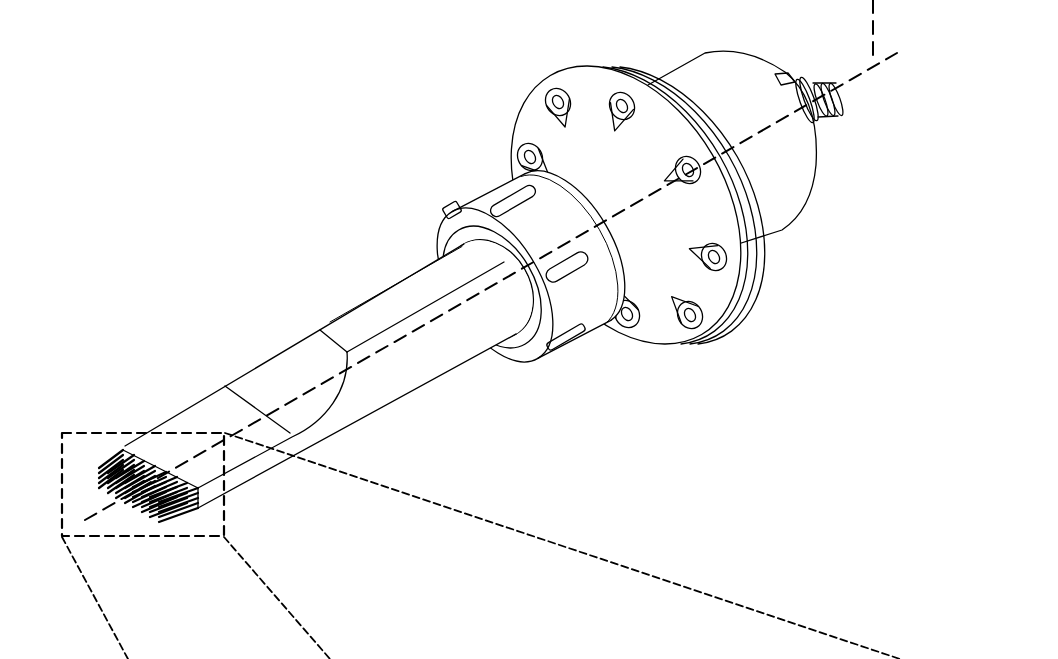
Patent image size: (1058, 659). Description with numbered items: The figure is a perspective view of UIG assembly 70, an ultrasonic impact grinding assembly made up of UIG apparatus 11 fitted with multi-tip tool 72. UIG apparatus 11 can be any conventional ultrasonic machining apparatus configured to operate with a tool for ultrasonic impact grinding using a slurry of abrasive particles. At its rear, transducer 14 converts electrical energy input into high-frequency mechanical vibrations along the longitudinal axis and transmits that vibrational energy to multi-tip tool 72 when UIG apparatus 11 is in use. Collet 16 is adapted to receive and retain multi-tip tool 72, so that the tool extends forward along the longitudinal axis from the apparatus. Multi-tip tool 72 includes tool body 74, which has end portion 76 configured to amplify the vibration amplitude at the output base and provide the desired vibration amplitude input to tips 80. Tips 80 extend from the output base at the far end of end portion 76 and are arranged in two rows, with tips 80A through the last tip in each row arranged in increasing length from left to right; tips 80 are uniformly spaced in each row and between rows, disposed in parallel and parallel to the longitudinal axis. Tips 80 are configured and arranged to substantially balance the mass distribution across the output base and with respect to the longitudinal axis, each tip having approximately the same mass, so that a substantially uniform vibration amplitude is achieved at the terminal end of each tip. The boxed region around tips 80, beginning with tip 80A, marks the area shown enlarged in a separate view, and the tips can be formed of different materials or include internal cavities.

The UIG assembly 70 is at (268, 116).
The UIG apparatus 11 is at (478, 131).
The transducer 14 is at (648, 86).
The collet 16 is at (438, 247).
The multi-tip tool 72 is at (198, 350).
The tool body 74 is at (402, 382).
The end portion 76 is at (252, 463).
The tips 80 is at (80, 454).
The tip 80A is at (594, 658).